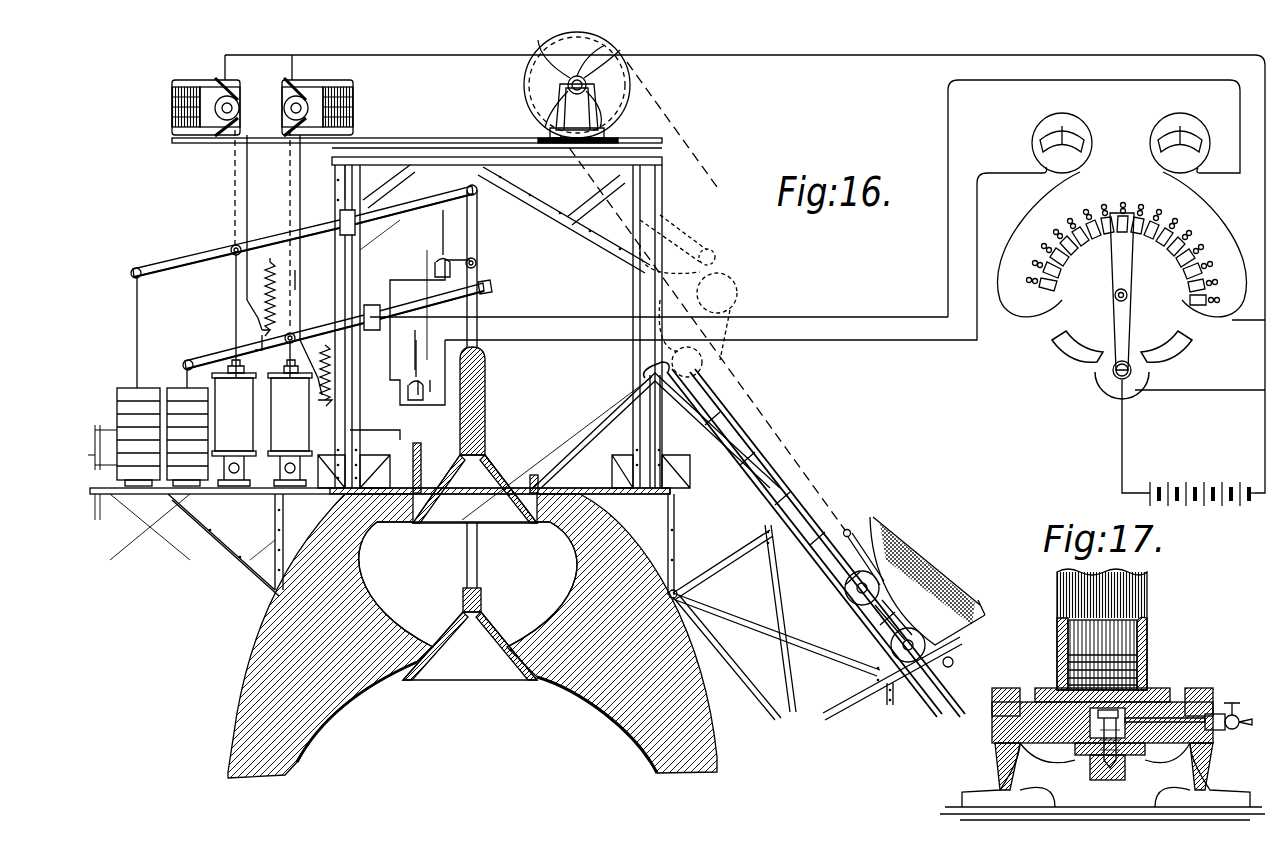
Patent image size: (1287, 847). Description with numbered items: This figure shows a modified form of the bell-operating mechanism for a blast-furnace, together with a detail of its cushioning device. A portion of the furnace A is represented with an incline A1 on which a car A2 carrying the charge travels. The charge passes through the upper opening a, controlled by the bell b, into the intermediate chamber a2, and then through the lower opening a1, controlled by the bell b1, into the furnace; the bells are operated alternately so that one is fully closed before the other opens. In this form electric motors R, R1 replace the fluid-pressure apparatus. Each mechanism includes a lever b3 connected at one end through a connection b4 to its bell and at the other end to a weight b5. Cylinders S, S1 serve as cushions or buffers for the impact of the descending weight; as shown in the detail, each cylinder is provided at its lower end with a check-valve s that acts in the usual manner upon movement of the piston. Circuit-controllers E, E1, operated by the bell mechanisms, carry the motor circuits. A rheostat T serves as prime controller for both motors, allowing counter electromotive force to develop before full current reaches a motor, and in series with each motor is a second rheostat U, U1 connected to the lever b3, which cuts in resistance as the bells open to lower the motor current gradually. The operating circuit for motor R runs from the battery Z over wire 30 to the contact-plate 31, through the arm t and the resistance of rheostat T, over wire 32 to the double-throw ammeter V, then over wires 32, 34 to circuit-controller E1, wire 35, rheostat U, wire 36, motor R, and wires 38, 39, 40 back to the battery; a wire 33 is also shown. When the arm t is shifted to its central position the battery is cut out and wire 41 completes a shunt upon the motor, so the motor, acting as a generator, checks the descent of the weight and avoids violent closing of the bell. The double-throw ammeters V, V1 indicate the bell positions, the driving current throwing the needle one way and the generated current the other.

In FIG. 16, the electric motor R is at (328, 197).
In FIG. 16, the electric motor R1 is at (216, 177).
In FIG. 16, the wire 38 is at (698, 58).
In FIG. 16, the wire 40 is at (1265, 440).
In FIG. 16, the wire 33 is at (1145, 88).
In FIG. 16, the wire 34 is at (784, 317).
In FIG. 16, the wire 35 is at (398, 285).
In FIG. 16, the wire 36 is at (298, 273).
In FIG. 16, the double-throw ammeter V is at (1183, 125).
In FIG. 16, the double-throw ammeter V1 is at (1053, 125).
In FIG. 16, the rheostat T is at (1123, 240).
In FIG. 16, the arm of rheostat t is at (1140, 255).
In FIG. 16, the wire 32 is at (1212, 222).
In FIG. 16, the contact-plate 31 is at (1072, 358).
In FIG. 16, the wire 39 is at (1248, 322).
In FIG. 16, the wire 41 is at (1204, 390).
In FIG. 16, the wire 30 is at (1122, 452).
In FIG. 16, the battery Z is at (1202, 507).
In FIG. 16, the lever b3 is at (140, 268).
In FIG. 16, the connection b4 is at (490, 284).
In FIG. 16, the weight b5 is at (148, 381).
In FIG. 16, the cylinder S is at (290, 414).
In FIG. 17, the cylinder S is at (1135, 595).
In FIG. 16, the cylinder S1 is at (234, 370).
In FIG. 17, the cylinder S1 is at (1102, 737).
In FIG. 16, the rheostat U is at (332, 392).
In FIG. 16, the rheostat U1 is at (262, 262).
In FIG. 16, the circuit-controller E is at (420, 383).
In FIG. 16, the circuit-controller E1 is at (452, 268).
In FIG. 16, the opening of the furnace a is at (428, 494).
In FIG. 16, the bell b is at (496, 480).
In FIG. 16, the bell b1 is at (483, 616).
In FIG. 16, the opening of the furnace a1 is at (518, 640).
In FIG. 16, the chamber a2 is at (468, 584).
In FIG. 16, the furnace A is at (585, 690).
In FIG. 16, the incline A1 is at (749, 541).
In FIG. 16, the car A2 is at (905, 545).
In FIG. 17, the check-valve s is at (1098, 770).